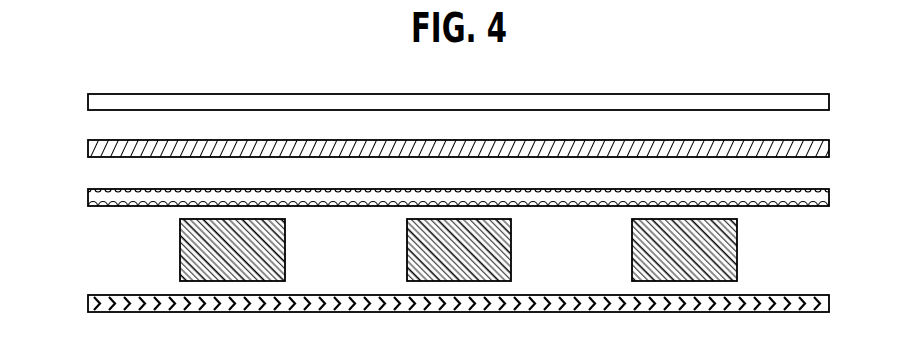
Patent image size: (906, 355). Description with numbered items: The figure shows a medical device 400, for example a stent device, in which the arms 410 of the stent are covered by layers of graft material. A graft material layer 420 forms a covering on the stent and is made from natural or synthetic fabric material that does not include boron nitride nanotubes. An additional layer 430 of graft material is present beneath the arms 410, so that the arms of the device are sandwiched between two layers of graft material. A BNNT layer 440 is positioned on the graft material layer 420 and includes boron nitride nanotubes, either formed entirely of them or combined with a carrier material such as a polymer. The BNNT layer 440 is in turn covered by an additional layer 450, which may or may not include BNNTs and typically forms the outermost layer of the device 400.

The medical device 400 is at (170, 77).
The arms 410 is at (737, 255).
The graft material layer 420 is at (88, 195).
The additional layer of graft material 430 is at (88, 302).
The BNNT layer 440 is at (829, 140).
The additional layer 450 is at (829, 94).